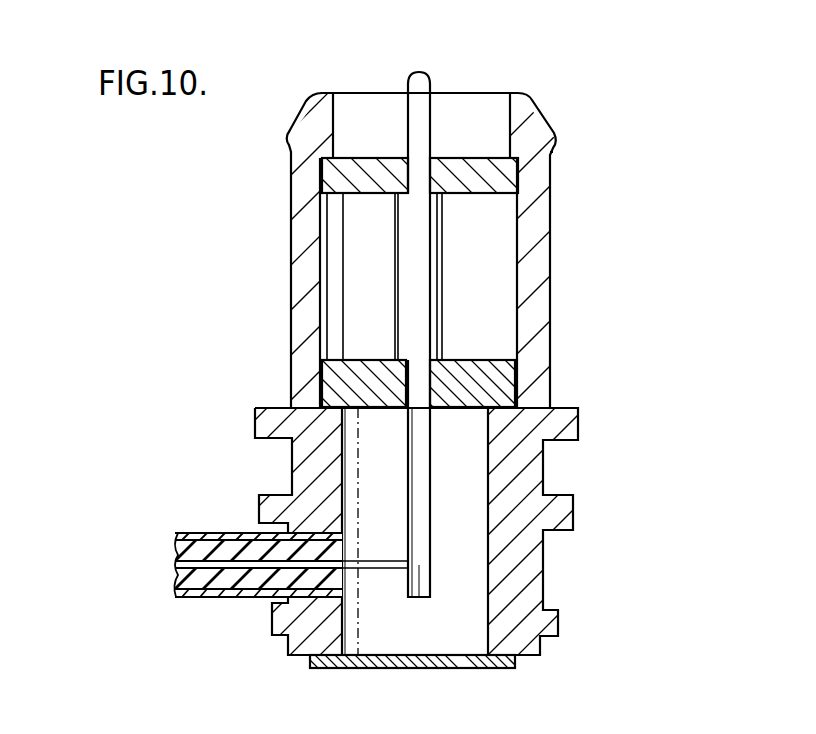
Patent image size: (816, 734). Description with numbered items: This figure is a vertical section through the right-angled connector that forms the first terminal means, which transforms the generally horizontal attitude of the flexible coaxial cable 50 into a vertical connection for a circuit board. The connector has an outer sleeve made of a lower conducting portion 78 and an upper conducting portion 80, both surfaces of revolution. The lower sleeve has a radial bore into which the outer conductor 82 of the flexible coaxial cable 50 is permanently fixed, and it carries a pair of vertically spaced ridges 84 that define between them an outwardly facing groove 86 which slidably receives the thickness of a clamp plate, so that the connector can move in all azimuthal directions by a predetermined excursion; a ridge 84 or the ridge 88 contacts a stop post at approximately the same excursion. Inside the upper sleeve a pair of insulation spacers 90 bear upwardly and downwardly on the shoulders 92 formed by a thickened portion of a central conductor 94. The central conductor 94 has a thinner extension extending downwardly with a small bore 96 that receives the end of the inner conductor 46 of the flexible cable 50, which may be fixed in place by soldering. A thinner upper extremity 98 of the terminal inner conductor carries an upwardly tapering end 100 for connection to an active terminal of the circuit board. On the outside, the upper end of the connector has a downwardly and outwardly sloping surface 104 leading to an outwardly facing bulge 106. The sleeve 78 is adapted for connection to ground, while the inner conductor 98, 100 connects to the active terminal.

The inner conductor 46 is at (373, 572).
The flexible coaxial cable 50 is at (198, 528).
The lower conducting portion 78 is at (545, 468).
The upper conducting portion 80 is at (545, 238).
The outer conductor 82 is at (203, 600).
The ridges 84 is at (578, 417).
The groove 86 is at (282, 473).
The ridge 88 is at (557, 612).
The insulation spacers 90 is at (370, 157).
The shoulders 92 is at (437, 193).
The central conductor 94 is at (423, 490).
The small bore 96 is at (428, 572).
The thinner upper extremity 98 is at (432, 112).
The upwardly tapering end 100 is at (420, 72).
The downwardly and outwardly sloping surface 104 is at (527, 108).
The outwardly facing bulge 106 is at (553, 153).